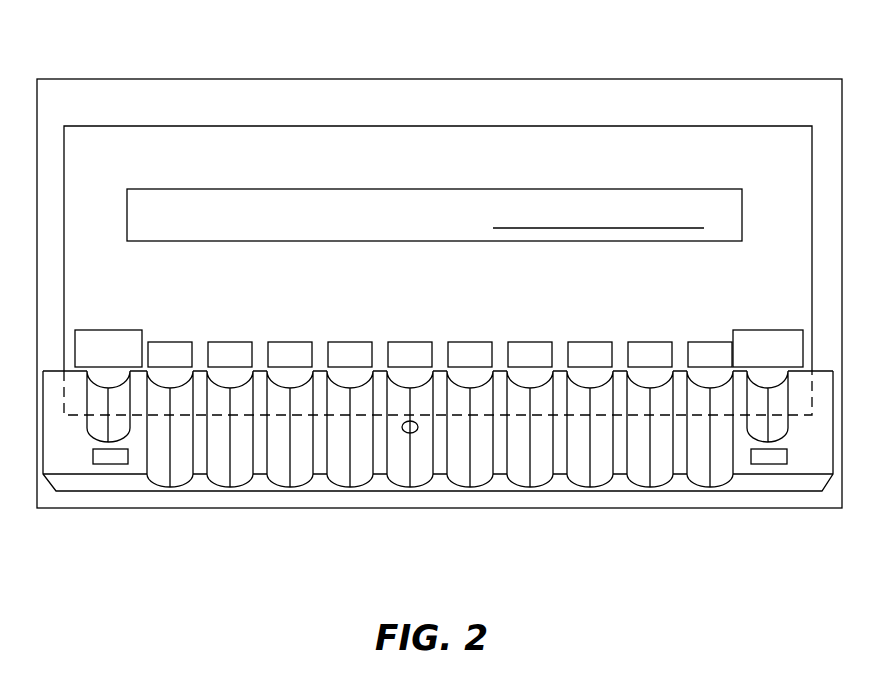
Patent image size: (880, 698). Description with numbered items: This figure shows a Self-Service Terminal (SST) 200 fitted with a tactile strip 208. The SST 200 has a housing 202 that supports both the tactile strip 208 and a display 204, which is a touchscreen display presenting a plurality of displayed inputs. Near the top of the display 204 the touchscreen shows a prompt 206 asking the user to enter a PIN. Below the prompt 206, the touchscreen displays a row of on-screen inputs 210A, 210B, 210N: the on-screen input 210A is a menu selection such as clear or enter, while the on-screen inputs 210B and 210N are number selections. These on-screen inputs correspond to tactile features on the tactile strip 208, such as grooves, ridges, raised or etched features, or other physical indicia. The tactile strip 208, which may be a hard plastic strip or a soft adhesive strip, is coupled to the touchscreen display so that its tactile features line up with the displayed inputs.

The Self-Service Terminal (SST) 200 is at (439, 277).
The housing 202 is at (148, 79).
The display 204 is at (225, 127).
The prompt 206 is at (308, 188).
The tactile strip 208 is at (438, 410).
The on-screen input 210A is at (135, 330).
The on-screen input 210B is at (248, 342).
The on-screen input 210N is at (473, 342).